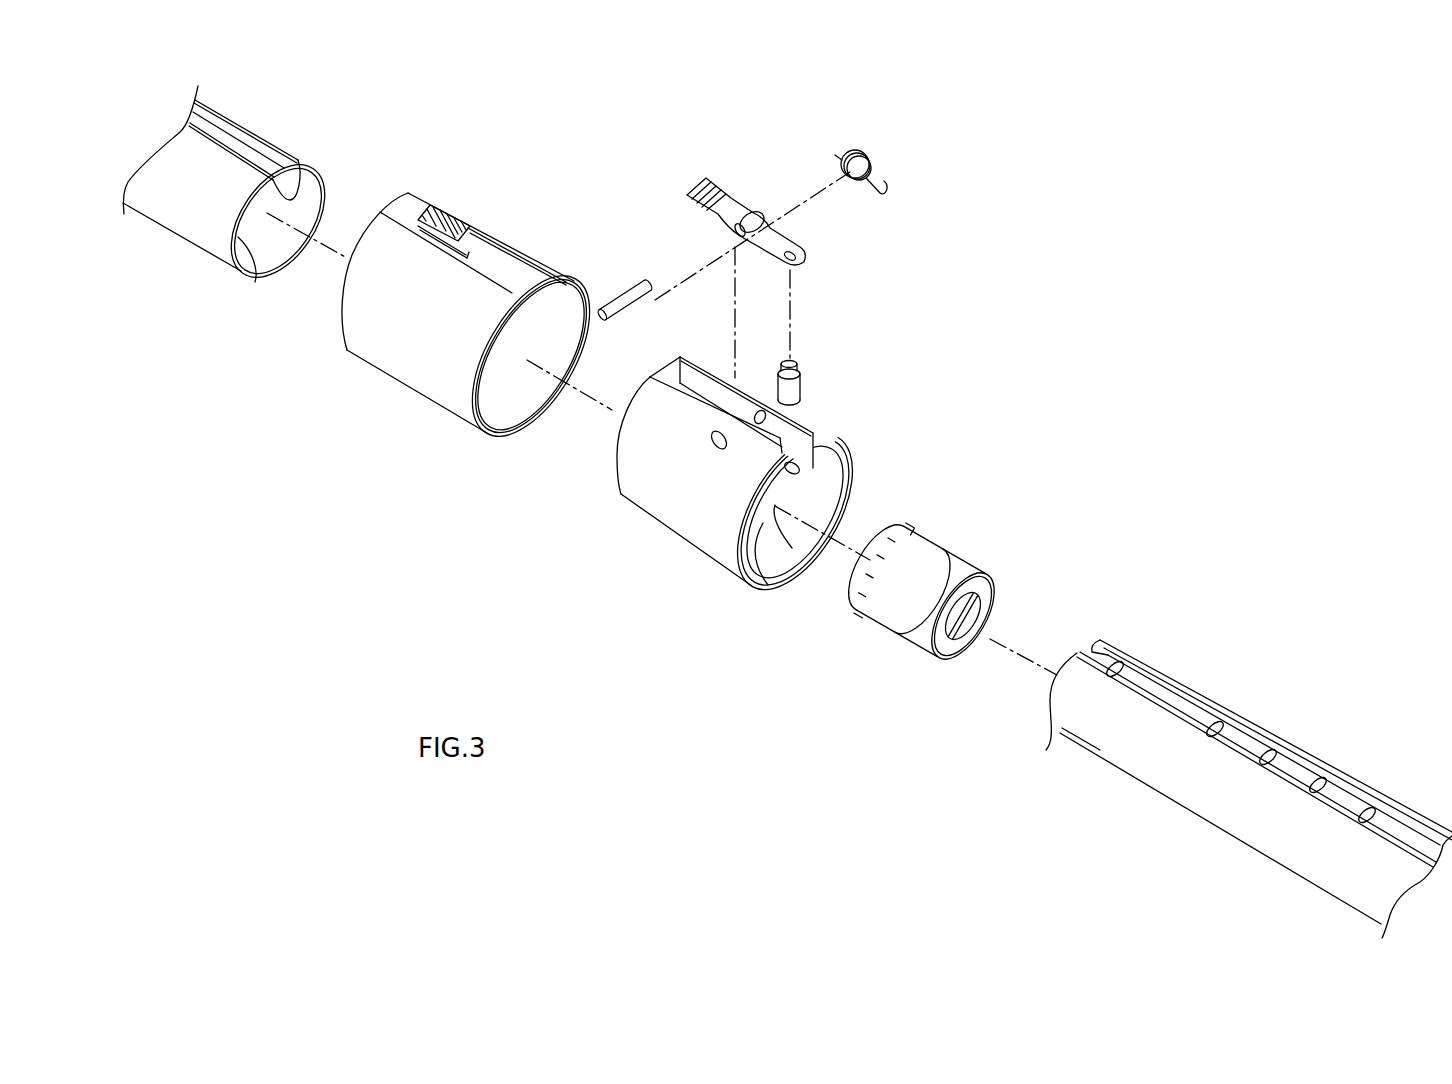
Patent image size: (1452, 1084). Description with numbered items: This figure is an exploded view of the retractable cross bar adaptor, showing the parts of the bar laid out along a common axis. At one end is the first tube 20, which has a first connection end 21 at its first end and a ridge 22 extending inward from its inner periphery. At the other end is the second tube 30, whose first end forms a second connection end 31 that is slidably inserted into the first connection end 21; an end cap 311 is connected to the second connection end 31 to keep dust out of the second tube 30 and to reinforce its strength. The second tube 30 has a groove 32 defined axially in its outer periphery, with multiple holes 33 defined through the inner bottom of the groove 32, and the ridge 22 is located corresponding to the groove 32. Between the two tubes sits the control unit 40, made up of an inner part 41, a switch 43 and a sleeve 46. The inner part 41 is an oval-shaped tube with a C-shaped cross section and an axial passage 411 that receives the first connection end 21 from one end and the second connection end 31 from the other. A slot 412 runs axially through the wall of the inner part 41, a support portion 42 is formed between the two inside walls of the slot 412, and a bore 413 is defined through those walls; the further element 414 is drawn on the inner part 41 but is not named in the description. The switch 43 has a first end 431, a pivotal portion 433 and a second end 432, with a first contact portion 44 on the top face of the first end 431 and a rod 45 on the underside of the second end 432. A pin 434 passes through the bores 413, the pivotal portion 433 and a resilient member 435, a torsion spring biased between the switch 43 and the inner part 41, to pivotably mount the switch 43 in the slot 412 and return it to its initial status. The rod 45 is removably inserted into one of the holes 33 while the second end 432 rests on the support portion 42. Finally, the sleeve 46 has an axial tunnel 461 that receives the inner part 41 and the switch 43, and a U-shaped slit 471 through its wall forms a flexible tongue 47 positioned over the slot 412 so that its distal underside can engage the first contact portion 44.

The first tube 20 is at (148, 200).
The first connection end 21 is at (257, 280).
The ridge 22 is at (297, 193).
The second tube 30 is at (1227, 815).
The second connection end 31 is at (1075, 722).
The groove 32 is at (1155, 688).
The holes 33 is at (1270, 742).
The end cap 311 is at (917, 627).
The control unit 40 is at (963, 197).
The inner part 41 is at (677, 547).
The passage 411 is at (773, 577).
The slot 412 is at (798, 473).
The bore 413 is at (716, 443).
The inner tab of housing 414 is at (793, 548).
The support portion 42 is at (670, 417).
The switch 43 is at (822, 272).
The first end 431 is at (735, 228).
The second end 432 is at (792, 248).
The pivotal portion 433 is at (750, 214).
The pin 434 is at (623, 293).
The resilient member 435 is at (883, 172).
The first contact portion 44 is at (707, 183).
The rod 45 is at (798, 387).
The sleeve 46 is at (405, 403).
The tunnel 461 is at (507, 408).
The tongue 47 is at (438, 210).
The U-shaped slit 471 is at (465, 259).